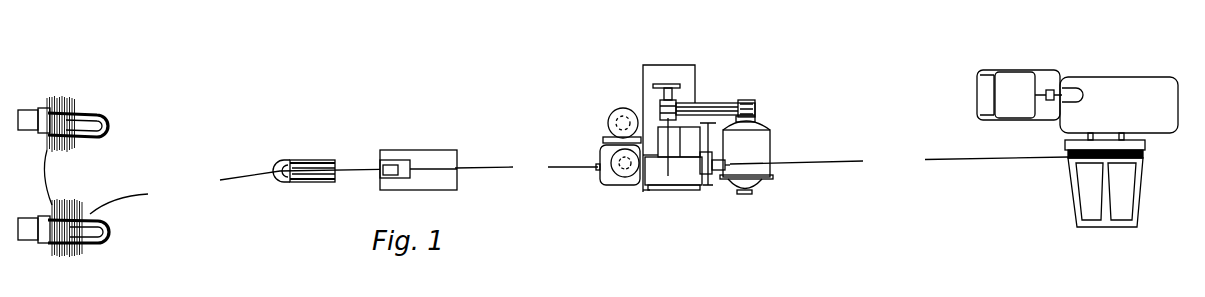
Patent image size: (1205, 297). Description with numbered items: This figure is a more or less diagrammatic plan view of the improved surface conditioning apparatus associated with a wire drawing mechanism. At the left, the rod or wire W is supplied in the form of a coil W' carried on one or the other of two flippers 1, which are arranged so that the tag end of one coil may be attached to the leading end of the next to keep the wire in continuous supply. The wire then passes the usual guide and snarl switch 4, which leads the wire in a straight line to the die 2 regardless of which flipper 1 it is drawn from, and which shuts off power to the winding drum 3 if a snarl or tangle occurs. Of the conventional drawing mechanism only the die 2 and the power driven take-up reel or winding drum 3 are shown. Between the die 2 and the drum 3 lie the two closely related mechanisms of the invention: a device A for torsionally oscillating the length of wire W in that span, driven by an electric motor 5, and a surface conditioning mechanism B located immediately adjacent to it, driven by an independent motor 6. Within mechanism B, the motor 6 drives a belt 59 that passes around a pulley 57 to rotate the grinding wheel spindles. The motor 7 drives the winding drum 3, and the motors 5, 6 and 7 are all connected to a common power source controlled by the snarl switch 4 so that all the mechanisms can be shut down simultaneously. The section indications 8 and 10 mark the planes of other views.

The flipper 1 is at (103, 118).
The coil W' is at (76, 179).
The wire W is at (640, 162).
The guide and snarl switch 4 is at (289, 160).
The die 2 is at (382, 153).
The take-up reel or winding drum 3 is at (564, 165).
The section line 10- 10 is at (549, 167).
The section line 8- 8 is at (677, 50).
The electric motor 5 is at (611, 113).
The pulley 57 is at (658, 104).
The drive belt 59 is at (712, 103).
The wire oscillating device A is at (614, 186).
The surface conditioning mechanism B is at (684, 188).
The independent motor 6 is at (770, 143).
The motor 7 is at (1012, 113).